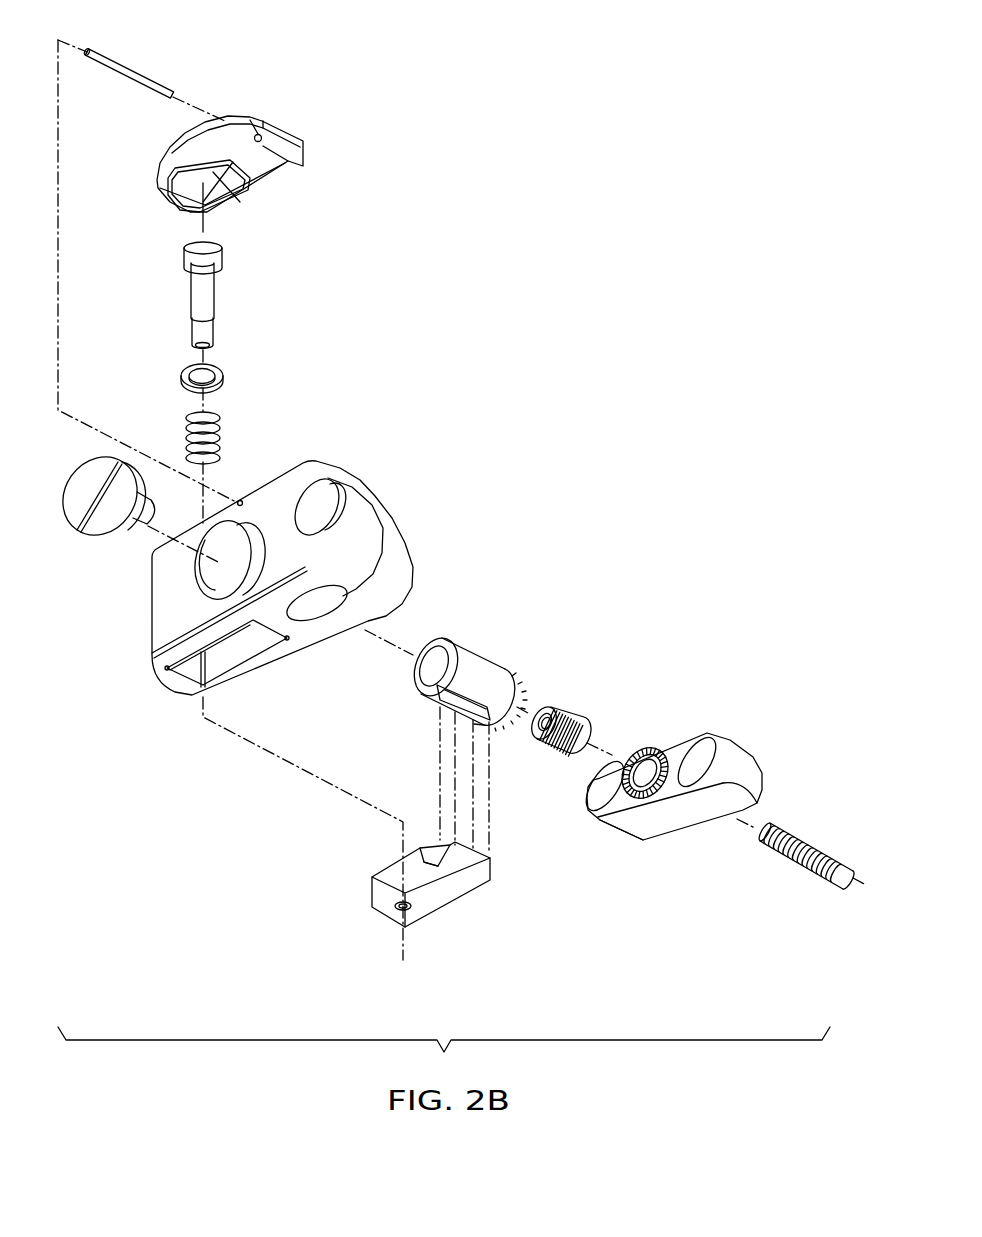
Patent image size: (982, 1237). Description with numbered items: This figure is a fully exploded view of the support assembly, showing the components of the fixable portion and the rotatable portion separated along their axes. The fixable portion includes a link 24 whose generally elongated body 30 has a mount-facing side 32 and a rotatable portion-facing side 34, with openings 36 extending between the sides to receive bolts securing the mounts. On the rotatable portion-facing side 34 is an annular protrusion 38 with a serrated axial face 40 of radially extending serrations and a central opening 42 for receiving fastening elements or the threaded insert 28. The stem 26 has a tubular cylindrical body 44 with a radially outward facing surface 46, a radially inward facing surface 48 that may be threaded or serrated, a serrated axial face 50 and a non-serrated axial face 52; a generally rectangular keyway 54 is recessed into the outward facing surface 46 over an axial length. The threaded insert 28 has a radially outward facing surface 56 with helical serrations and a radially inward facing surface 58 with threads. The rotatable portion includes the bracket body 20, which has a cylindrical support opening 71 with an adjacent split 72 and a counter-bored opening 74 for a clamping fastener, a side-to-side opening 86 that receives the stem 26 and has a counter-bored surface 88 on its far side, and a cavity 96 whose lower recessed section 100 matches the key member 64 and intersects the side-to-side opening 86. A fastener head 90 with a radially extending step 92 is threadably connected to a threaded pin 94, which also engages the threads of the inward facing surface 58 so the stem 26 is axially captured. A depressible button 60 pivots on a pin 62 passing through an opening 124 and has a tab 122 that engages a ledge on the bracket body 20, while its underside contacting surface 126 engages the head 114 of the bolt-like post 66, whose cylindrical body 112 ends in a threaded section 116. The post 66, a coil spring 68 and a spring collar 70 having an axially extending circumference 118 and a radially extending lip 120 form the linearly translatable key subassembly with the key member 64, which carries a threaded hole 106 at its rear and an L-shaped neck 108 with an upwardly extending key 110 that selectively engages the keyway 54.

The bracket body 20 is at (257, 591).
The link 24 is at (675, 768).
The stem 26 is at (473, 673).
The threaded insert 28 is at (568, 717).
The body 30 is at (692, 817).
The mount-facing side 32 is at (730, 818).
The rotatable portion-facing side 34 is at (627, 803).
The openings 36 is at (703, 748).
The annular protrusion 38 is at (647, 793).
The serrated axial face 40 is at (653, 738).
The opening 42 is at (630, 753).
The tubular cylindrical body 44 is at (487, 665).
The radially outward facing surface 46 is at (477, 658).
The radially inward facing surface 48 is at (427, 672).
The serrated axial face 50 is at (503, 712).
The non-serrated axial face 52 is at (437, 645).
The keyway 54 is at (470, 702).
The radially outward facing surface 56 is at (570, 750).
The radially inward facing surface 58 is at (545, 710).
The depressible button 60 is at (218, 128).
The pin 62 is at (134, 66).
The key member 64 is at (434, 884).
The post 66 is at (222, 289).
The spring 68 is at (236, 434).
The spring collar 70 is at (215, 377).
The support opening 71 is at (327, 610).
The split 72 is at (383, 511).
The counter-bored opening 74 is at (316, 490).
The side-to-side opening 86 is at (232, 573).
The counter-bored surface 88 is at (200, 545).
The fastener head 90 is at (101, 533).
The radially extending step 92 is at (117, 533).
The threaded pin 94 is at (813, 843).
The cavity 96 is at (268, 648).
The lower recessed section 100 is at (237, 652).
The threaded hole 106 is at (403, 912).
The neck 108 is at (437, 867).
The key 110 is at (479, 852).
The cylindrical body 112 is at (202, 292).
The head 114 is at (220, 252).
The threaded section 116 is at (207, 330).
The axially extending circumference 118 is at (216, 367).
The radially extending lip 120 is at (193, 384).
The tab 122 is at (175, 208).
The opening 124 is at (250, 120).
The contacting surface 126 is at (213, 173).